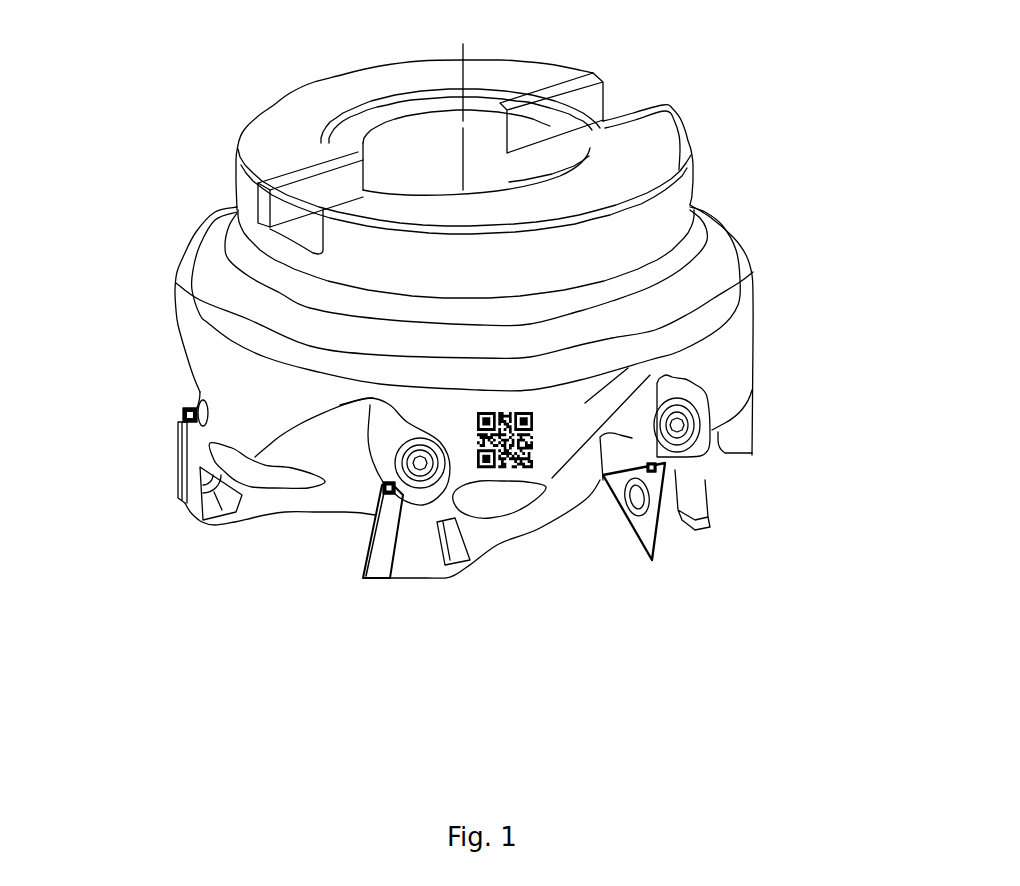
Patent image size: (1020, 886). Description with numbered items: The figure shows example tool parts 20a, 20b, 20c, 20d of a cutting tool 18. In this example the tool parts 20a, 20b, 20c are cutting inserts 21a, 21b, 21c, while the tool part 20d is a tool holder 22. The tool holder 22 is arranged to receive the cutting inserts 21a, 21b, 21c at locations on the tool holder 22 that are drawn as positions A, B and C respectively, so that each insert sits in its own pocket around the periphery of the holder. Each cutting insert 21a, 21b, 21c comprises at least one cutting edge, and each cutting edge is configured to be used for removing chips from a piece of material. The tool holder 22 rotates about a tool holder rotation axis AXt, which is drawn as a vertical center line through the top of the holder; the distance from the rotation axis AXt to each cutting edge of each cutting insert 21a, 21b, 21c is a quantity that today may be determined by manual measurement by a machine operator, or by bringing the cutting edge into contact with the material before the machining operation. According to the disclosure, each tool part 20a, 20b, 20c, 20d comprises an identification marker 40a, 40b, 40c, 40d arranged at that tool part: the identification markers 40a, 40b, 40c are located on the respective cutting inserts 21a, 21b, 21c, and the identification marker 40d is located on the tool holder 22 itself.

The cutting tool 18 is at (143, 113).
The tool holder 22 is at (781, 305).
The tool part 20a is at (160, 470).
The tool part 20b is at (351, 542).
The tool part 20c is at (682, 533).
The tool part 20d is at (732, 352).
The cutting insert 21a is at (161, 504).
The cutting insert 21b is at (350, 567).
The cutting insert 21c is at (671, 574).
The identification marker 40a is at (165, 416).
The identification marker 40b is at (403, 512).
The identification marker 40c is at (675, 471).
The identification marker 40d is at (524, 486).
The position A is at (170, 546).
The position B is at (403, 618).
The position C is at (652, 615).
The tool holder rotation axis AXt is at (461, 100).